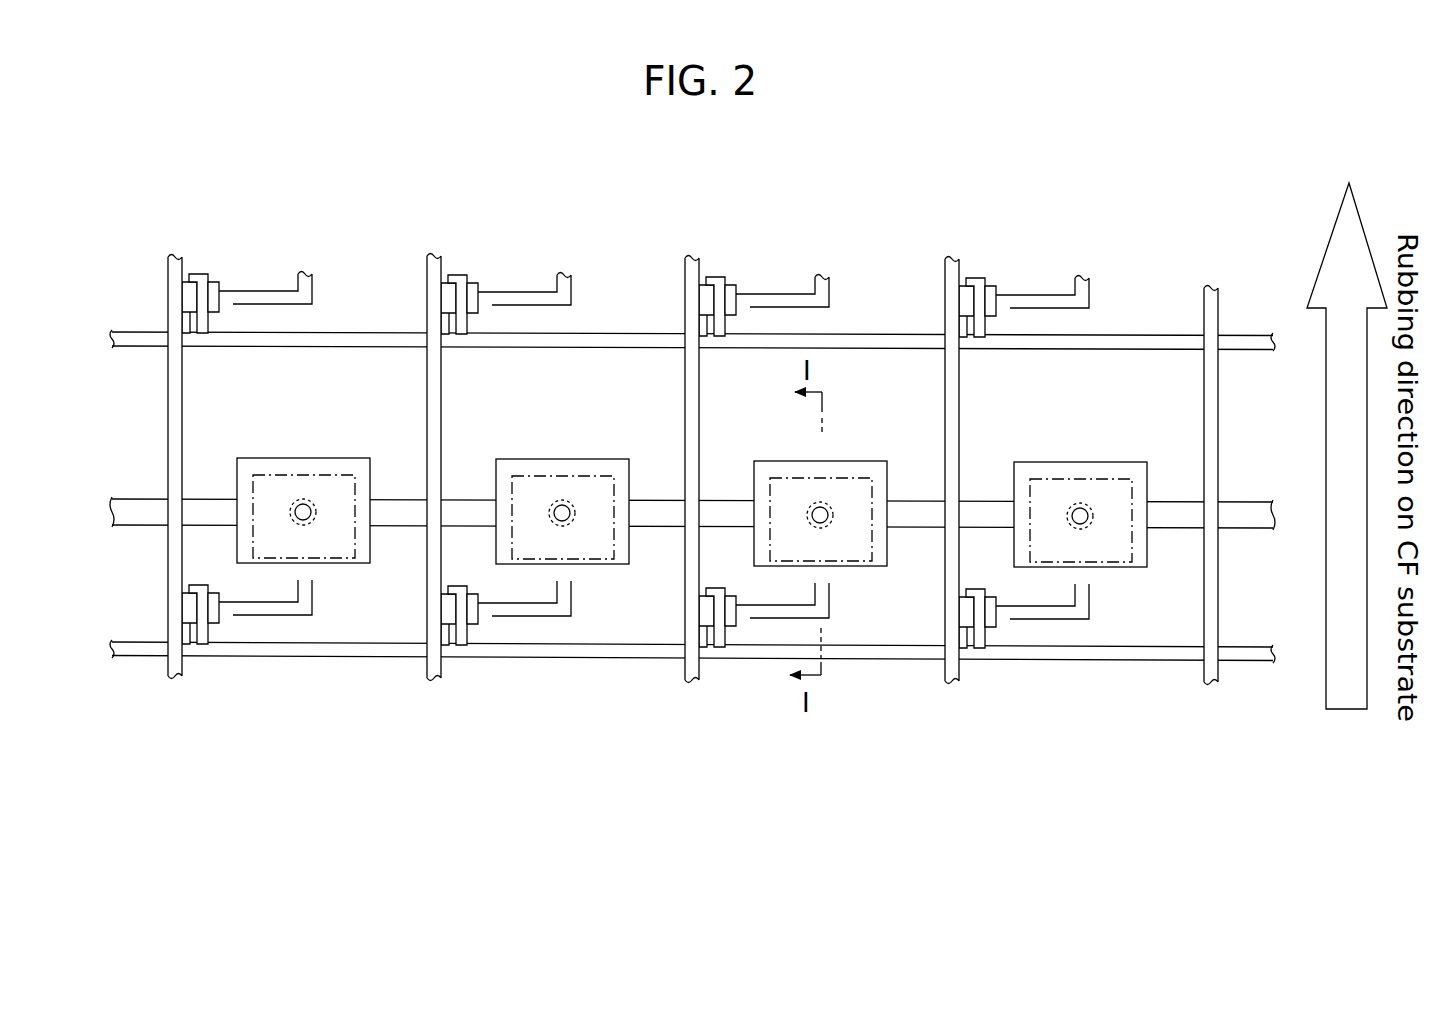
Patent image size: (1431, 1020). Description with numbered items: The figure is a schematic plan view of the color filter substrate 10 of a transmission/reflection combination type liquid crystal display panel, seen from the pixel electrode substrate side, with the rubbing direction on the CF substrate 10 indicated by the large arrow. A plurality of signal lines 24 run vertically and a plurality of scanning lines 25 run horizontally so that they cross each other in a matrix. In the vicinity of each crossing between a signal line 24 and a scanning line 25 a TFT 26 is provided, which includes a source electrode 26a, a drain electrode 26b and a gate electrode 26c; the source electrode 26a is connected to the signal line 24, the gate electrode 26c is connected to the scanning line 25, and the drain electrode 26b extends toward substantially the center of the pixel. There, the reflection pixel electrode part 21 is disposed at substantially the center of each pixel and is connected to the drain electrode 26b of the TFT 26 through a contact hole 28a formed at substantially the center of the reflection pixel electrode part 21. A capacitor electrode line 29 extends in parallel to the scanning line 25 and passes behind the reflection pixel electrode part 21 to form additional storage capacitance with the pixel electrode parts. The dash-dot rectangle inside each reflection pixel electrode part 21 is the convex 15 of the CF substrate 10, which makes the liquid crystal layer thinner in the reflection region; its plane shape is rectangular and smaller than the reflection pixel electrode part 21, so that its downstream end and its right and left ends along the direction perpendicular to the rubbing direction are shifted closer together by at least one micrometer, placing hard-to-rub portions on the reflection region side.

The color filter substrate 10 is at (164, 203).
The convex 15 is at (355, 540).
The reflection pixel electrode part 21 is at (372, 545).
The signal line 24 is at (168, 407).
The scanning line 25 is at (1093, 351).
The TFT 26 is at (623, 484).
The source electrode 26a is at (712, 284).
The drain electrode 26b is at (742, 292).
The gate electrode 26c is at (723, 274).
The contact hole 28a is at (301, 502).
The capacitor electrode line 29 is at (979, 501).